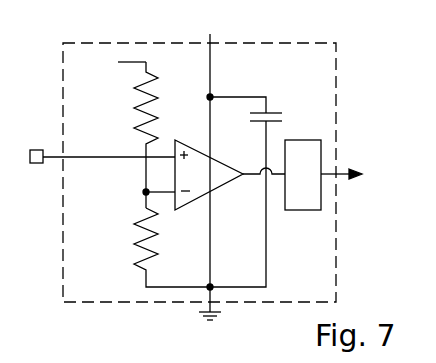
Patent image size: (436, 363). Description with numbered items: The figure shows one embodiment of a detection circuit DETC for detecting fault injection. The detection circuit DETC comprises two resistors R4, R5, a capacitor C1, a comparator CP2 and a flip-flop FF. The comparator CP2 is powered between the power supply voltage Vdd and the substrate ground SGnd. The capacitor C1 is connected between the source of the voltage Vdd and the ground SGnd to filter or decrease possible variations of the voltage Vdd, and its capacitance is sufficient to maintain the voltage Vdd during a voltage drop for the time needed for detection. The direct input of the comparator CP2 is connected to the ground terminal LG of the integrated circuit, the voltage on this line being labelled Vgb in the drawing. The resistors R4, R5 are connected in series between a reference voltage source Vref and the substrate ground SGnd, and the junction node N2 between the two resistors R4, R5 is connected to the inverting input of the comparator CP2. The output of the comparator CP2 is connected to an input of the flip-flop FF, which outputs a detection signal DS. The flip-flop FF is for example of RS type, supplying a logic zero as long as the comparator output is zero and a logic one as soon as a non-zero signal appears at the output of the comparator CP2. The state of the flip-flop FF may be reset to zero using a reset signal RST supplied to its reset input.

The detection circuit DETC is at (334, 76).
The power supply voltage Vdd is at (229, 33).
The substrate ground SGnd is at (206, 318).
The capacitor C1 is at (281, 118).
The reference voltage source Vref is at (110, 63).
The resistor R4 is at (134, 106).
The gate-bulk voltage node Vgb is at (109, 146).
The ground terminal LG is at (37, 164).
The junction node N2 is at (144, 192).
The resistor R5 is at (134, 258).
The comparator CP2 is at (221, 184).
The flip-flop FF is at (316, 185).
The reset signal RST is at (300, 210).
The detection signal DS is at (360, 175).